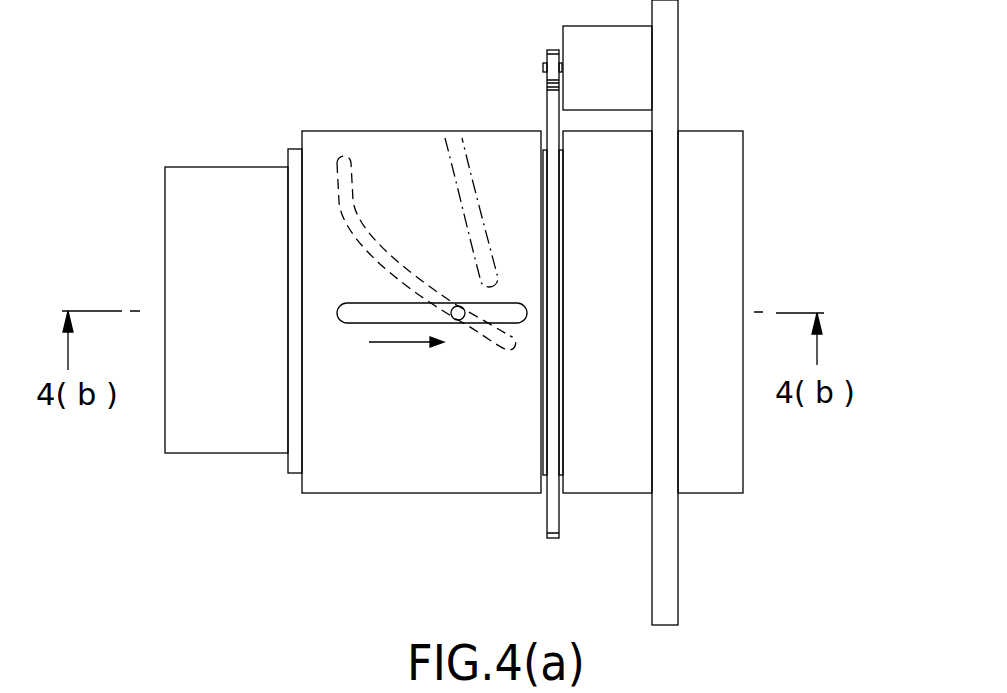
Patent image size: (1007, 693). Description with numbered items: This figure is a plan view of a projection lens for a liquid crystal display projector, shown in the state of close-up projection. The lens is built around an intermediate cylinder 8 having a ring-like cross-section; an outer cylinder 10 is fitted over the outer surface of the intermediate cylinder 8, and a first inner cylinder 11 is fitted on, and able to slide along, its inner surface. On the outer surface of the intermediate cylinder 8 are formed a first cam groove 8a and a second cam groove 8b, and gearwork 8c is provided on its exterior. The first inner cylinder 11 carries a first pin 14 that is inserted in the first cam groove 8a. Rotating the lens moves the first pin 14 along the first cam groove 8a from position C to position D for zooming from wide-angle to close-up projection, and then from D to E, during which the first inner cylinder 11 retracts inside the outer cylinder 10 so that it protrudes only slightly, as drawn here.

The intermediate cylinder 8 is at (297, 467).
The first cam groove 8a is at (350, 160).
The second cam groove 8b is at (468, 160).
The gearwork 8c is at (553, 538).
The outer cylinder 10 is at (412, 478).
The first inner cylinder 11 is at (245, 443).
The first pin 14 is at (455, 322).